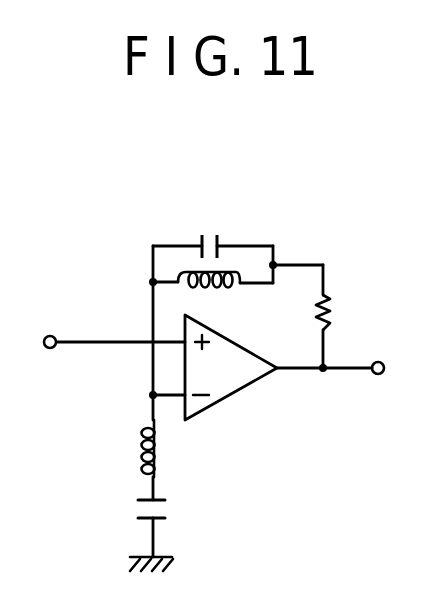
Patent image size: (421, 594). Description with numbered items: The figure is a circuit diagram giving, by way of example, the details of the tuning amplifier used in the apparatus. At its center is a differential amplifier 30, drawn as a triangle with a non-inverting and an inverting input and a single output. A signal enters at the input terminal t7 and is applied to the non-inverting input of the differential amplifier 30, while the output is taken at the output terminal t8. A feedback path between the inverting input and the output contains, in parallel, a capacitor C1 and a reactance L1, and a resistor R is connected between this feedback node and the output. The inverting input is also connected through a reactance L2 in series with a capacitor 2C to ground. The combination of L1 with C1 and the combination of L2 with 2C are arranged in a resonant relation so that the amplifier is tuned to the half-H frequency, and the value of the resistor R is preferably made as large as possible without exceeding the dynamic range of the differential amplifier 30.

The differential amplifier 30 is at (240, 390).
The capacitor C1 is at (205, 235).
The reactance L1 is at (216, 287).
The resistor R is at (332, 315).
The terminal t7 is at (50, 335).
The terminal t8 is at (378, 361).
The reactance L2 is at (142, 459).
The capacitor 2C is at (165, 498).